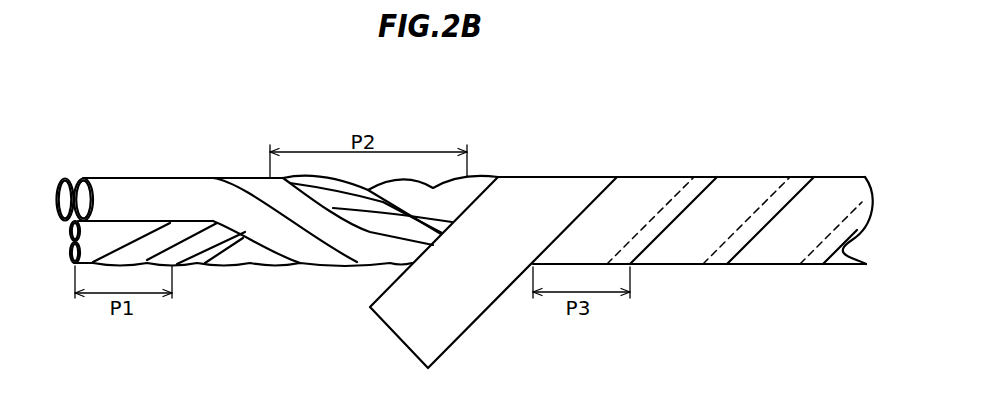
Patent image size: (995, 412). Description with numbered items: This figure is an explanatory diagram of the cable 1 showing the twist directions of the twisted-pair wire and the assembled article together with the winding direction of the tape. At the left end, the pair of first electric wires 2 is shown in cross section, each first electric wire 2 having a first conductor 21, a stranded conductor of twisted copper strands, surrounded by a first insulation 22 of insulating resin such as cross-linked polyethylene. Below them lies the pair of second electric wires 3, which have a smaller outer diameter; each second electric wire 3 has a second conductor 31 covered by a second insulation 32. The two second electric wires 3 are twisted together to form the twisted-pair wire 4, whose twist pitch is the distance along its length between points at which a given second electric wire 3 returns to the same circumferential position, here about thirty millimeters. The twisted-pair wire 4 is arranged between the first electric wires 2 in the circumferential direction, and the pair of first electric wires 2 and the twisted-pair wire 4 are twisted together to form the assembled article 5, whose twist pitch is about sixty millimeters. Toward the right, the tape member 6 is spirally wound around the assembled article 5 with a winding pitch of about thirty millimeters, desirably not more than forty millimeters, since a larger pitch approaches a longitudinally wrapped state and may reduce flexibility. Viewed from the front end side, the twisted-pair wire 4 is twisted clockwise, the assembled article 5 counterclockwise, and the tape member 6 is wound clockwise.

The cable 1 is at (803, 145).
The first electric wire 2 is at (102, 179).
The first conductor 21 is at (61, 180).
The first insulation 22 is at (68, 181).
The second electric wire 3 is at (180, 235).
The second conductor 31 is at (74, 257).
The second insulation 32 is at (88, 248).
The twisted-pair wire 4 is at (240, 250).
The assembled article 5 is at (221, 170).
The tape member 6 is at (773, 257).